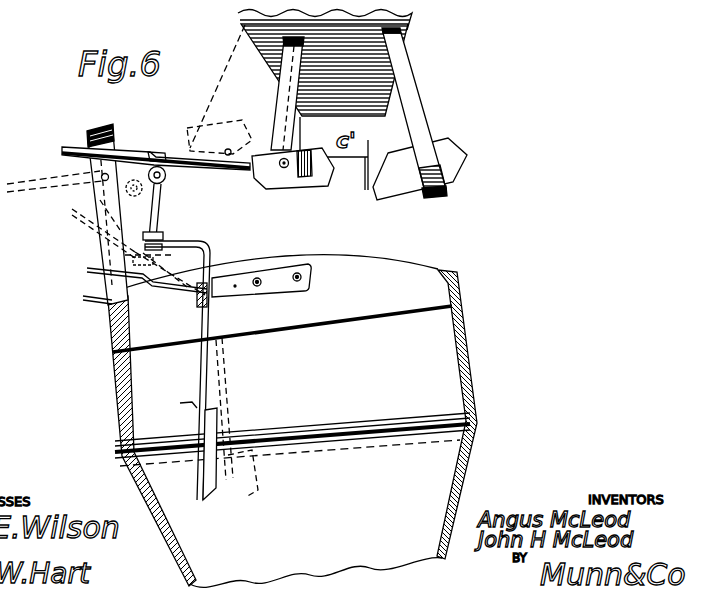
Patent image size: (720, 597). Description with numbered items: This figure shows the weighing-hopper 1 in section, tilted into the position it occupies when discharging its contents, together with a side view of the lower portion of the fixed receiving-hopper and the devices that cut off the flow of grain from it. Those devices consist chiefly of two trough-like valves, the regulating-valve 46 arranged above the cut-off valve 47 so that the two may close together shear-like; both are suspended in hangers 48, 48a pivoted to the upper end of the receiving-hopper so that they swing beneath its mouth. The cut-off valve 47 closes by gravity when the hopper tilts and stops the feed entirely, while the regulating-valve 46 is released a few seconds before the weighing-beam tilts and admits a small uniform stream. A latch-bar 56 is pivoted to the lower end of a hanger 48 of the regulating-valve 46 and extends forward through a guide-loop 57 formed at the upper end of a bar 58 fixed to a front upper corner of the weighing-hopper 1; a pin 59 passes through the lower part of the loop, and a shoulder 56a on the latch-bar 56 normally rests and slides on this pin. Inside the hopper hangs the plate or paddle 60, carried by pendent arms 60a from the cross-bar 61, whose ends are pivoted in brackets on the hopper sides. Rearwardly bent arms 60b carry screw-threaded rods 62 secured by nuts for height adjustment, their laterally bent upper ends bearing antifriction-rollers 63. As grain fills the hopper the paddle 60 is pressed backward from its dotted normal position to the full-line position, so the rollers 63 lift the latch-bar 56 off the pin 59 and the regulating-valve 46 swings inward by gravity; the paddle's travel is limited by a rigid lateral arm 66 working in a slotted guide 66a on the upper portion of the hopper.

The weighing-hopper 1 is at (120, 392).
The regulating-valve 46 is at (321, 182).
The cut-off valve 47 is at (399, 186).
The hanger 48 is at (282, 108).
The arm 48a is at (423, 84).
The latch-bar 56 is at (187, 150).
The shoulder 56a is at (157, 153).
The guide-loop 57 is at (105, 204).
The bar 58 is at (105, 207).
The pin 59 is at (102, 178).
The plate or paddle 60 is at (208, 438).
The arm 60a is at (215, 340).
The arm 60b is at (212, 246).
The cross-bar 61 is at (200, 306).
The screw-threaded rod 62 is at (158, 213).
The antifriction-roller 63 is at (166, 176).
The lateral arm 66 is at (88, 270).
The slotted guide 66a is at (118, 295).